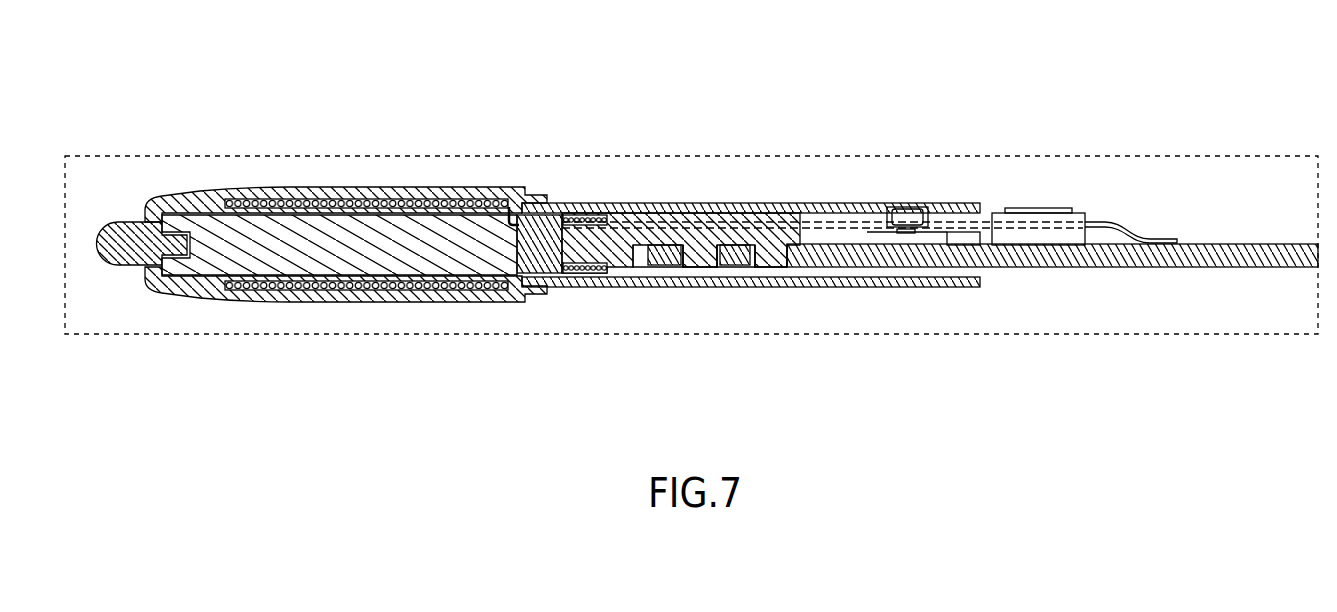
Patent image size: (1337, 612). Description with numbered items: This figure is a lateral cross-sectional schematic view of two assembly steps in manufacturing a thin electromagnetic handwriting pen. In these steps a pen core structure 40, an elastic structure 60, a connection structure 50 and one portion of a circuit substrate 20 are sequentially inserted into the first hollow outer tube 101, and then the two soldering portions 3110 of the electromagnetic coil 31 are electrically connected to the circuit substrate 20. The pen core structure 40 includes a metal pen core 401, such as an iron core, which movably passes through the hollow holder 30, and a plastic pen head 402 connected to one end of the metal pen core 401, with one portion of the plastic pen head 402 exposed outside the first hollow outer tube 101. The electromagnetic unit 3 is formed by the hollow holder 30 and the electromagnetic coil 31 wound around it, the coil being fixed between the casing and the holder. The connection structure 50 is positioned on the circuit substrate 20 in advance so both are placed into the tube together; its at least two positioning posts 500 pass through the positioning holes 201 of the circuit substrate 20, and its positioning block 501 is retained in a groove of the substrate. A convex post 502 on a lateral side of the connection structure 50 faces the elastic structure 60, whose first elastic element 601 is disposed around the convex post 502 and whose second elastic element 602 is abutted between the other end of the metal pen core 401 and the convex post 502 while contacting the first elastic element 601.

The pen core structure 40 is at (298, 159).
The plastic pen head 402 is at (120, 247).
The metal pen core 401 is at (215, 240).
The electromagnetic unit 3 is at (366, 167).
The hollow holder 30 is at (366, 207).
The electromagnetic coil 31 is at (441, 207).
The elastic structure 60 is at (563, 158).
The second elastic element 602 is at (545, 247).
The first elastic element 601 is at (580, 220).
The connection structure 50 is at (662, 233).
The positioning holes 201 is at (740, 240).
The soldering portions 3110 is at (1172, 241).
The circuit substrate 20 is at (1253, 253).
The first hollow outer tube 101 is at (345, 295).
The convex post 502 is at (573, 272).
The positioning block 501 is at (634, 272).
The positioning posts 500 is at (705, 263).